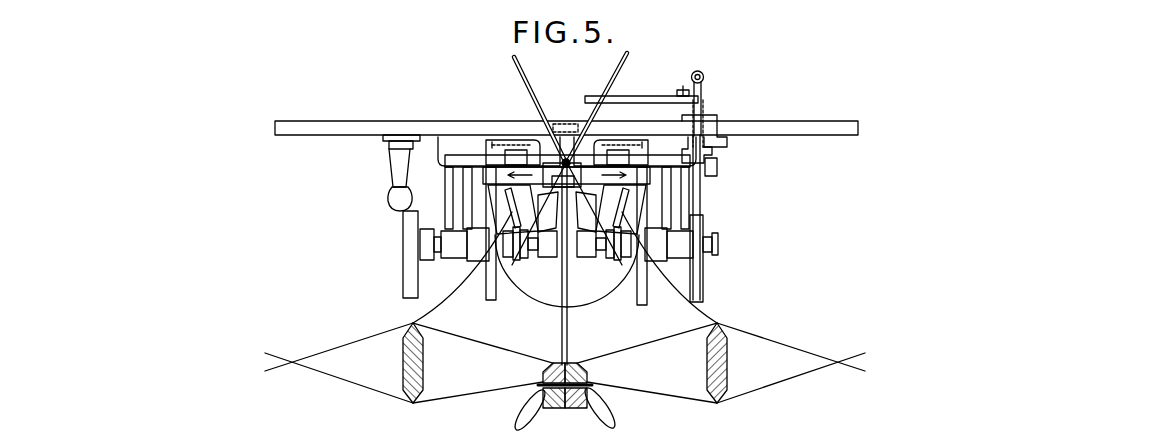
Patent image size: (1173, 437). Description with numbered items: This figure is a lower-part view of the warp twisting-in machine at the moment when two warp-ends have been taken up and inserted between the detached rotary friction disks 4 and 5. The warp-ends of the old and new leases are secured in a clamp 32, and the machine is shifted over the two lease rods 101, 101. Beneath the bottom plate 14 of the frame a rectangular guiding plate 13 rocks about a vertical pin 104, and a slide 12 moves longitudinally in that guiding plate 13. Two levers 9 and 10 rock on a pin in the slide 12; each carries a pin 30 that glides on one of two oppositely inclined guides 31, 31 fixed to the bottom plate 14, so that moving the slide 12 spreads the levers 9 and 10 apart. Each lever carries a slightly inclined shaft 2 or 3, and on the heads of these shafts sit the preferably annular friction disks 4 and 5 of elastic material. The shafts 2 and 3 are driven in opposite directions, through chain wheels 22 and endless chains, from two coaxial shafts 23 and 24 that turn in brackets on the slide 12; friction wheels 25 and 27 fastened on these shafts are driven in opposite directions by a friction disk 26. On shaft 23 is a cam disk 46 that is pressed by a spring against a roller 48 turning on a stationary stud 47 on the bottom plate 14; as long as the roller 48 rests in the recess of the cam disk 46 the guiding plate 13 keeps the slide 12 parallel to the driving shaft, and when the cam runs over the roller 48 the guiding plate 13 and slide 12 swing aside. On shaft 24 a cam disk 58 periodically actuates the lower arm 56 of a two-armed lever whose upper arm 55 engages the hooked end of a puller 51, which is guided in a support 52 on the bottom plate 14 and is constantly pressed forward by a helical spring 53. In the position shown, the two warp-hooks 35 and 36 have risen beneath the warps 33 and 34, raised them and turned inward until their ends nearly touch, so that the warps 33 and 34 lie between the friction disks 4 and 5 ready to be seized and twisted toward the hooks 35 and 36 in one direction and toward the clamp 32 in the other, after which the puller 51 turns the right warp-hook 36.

The shaft 2 is at (487, 198).
The shaft 3 is at (640, 198).
The friction disk 4 is at (556, 265).
The friction disk 5 is at (574, 265).
The lever 9 is at (490, 170).
The lever 10 is at (688, 174).
The slide 12 is at (712, 150).
The guiding plate 13 is at (495, 142).
The bottom plate 14 is at (780, 132).
The chain wheel 22 is at (514, 262).
The shaft 23 is at (438, 258).
The shaft 24 is at (662, 258).
The friction wheel 25 is at (490, 292).
The friction disk 26 is at (548, 309).
The friction wheel 27 is at (642, 292).
The pin 30 is at (485, 143).
The inclined guide 31 is at (538, 140).
The clamp 32 is at (540, 386).
The warp 33 is at (455, 304).
The warp 34 is at (706, 310).
The warp-hook 35 is at (524, 80).
The warp-hook 36 is at (611, 80).
The cam disk 46 is at (403, 250).
The stationary stud 47 is at (392, 160).
The roller 48 is at (392, 197).
The puller 51 is at (662, 96).
The support 52 is at (704, 76).
The helical spring 53 is at (684, 88).
The upper arm 55 is at (712, 135).
The lower arm 56 is at (714, 218).
The cam disk 58 is at (705, 280).
The lease rod 101 is at (403, 365).
The vertical pin 104 is at (568, 122).